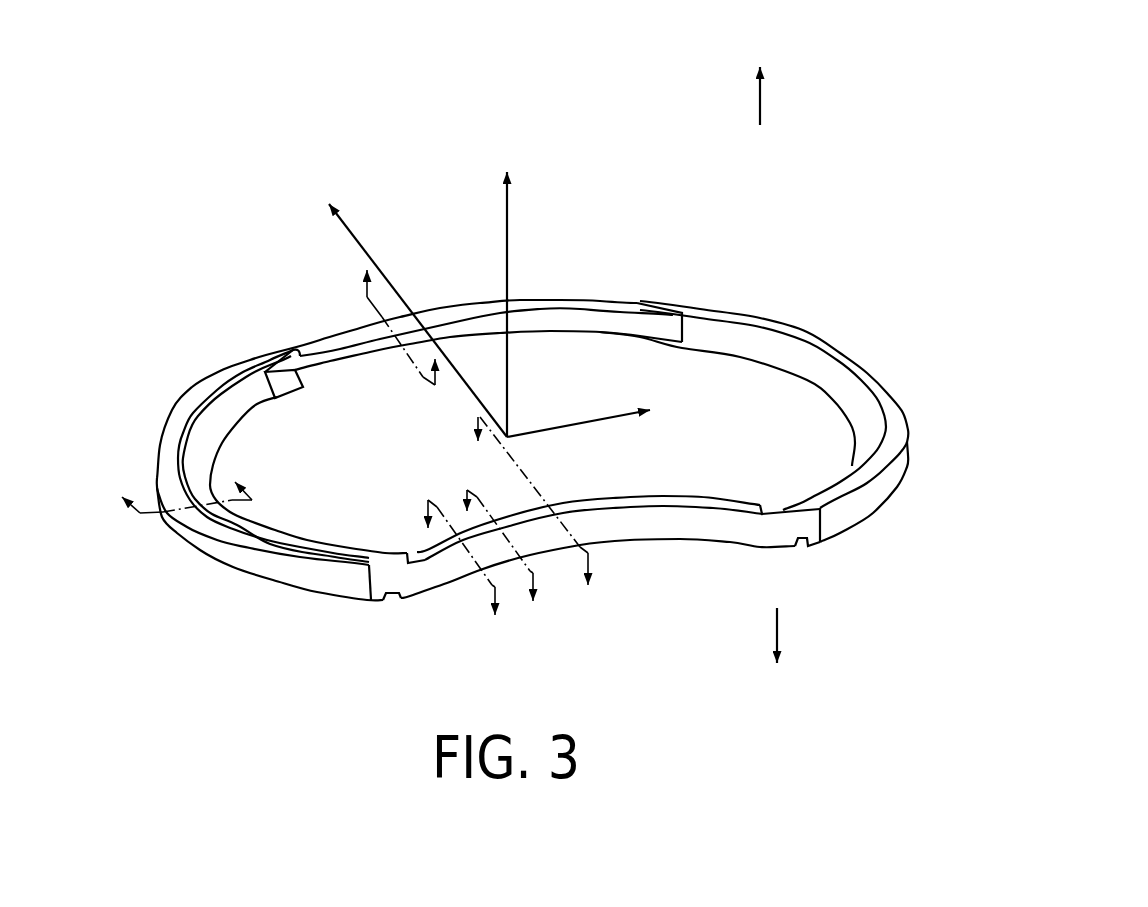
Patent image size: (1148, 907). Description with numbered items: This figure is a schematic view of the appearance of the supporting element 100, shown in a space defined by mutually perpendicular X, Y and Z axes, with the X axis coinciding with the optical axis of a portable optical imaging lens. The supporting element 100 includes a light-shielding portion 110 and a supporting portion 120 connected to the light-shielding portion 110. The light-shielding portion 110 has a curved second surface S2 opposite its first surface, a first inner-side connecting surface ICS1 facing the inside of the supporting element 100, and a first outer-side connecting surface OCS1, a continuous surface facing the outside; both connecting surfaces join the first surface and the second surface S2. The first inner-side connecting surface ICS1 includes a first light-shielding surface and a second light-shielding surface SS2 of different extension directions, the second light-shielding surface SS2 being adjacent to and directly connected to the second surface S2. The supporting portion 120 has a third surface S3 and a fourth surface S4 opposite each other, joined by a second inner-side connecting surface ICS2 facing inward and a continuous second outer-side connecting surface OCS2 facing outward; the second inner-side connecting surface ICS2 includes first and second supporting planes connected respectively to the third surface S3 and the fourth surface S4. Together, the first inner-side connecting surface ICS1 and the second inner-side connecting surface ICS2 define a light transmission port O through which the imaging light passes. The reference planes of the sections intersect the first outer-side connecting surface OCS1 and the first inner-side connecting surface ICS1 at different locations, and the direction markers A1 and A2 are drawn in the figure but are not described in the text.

The supporting element 100 is at (932, 709).
The light-shielding portion 110 is at (532, 369).
The supporting portion 120 is at (486, 513).
The second surface S2 is at (577, 300).
The third surface S3 is at (400, 603).
The fourth surface S4 is at (301, 552).
The first outer-side connecting surface OCS1 is at (612, 300).
The second outer-side connecting surface OCS2 is at (217, 546).
The first inner-side connecting surface ICS1 is at (308, 475).
The second inner-side connecting surface ICS2 is at (207, 431).
The second light-shielding surface SS2 is at (311, 460).
The light transmission port O is at (728, 407).
The first direction A1 is at (781, 660).
The second direction A2 is at (759, 75).